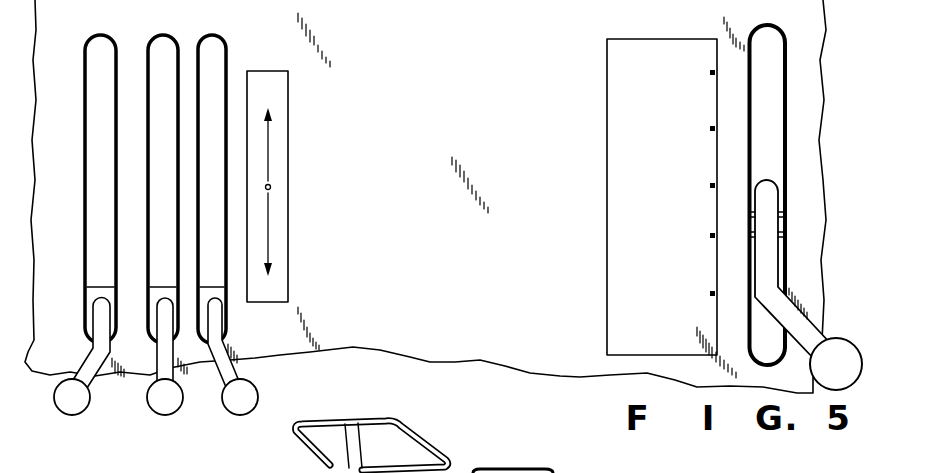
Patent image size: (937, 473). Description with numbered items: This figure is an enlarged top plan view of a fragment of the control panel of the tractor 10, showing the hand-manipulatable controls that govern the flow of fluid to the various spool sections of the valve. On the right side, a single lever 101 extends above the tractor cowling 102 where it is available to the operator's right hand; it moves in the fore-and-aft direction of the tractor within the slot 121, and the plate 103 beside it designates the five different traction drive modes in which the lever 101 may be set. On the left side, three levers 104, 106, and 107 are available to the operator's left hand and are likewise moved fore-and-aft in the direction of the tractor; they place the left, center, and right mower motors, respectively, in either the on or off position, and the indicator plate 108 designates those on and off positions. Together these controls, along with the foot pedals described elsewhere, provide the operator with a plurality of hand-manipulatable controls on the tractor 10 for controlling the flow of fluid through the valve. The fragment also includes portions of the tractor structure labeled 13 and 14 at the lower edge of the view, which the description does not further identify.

The tractor 10 is at (315, 469).
The seat 13 is at (543, 469).
The steering handle frame 14 is at (433, 440).
The single lever 101 is at (788, 310).
The tractor cowling 102 is at (539, 363).
The plate 103 is at (611, 208).
The lever 104 is at (95, 386).
The lever 106 is at (173, 402).
The lever 107 is at (245, 394).
The indicator plate 108 is at (287, 186).
The slot 121 is at (783, 134).